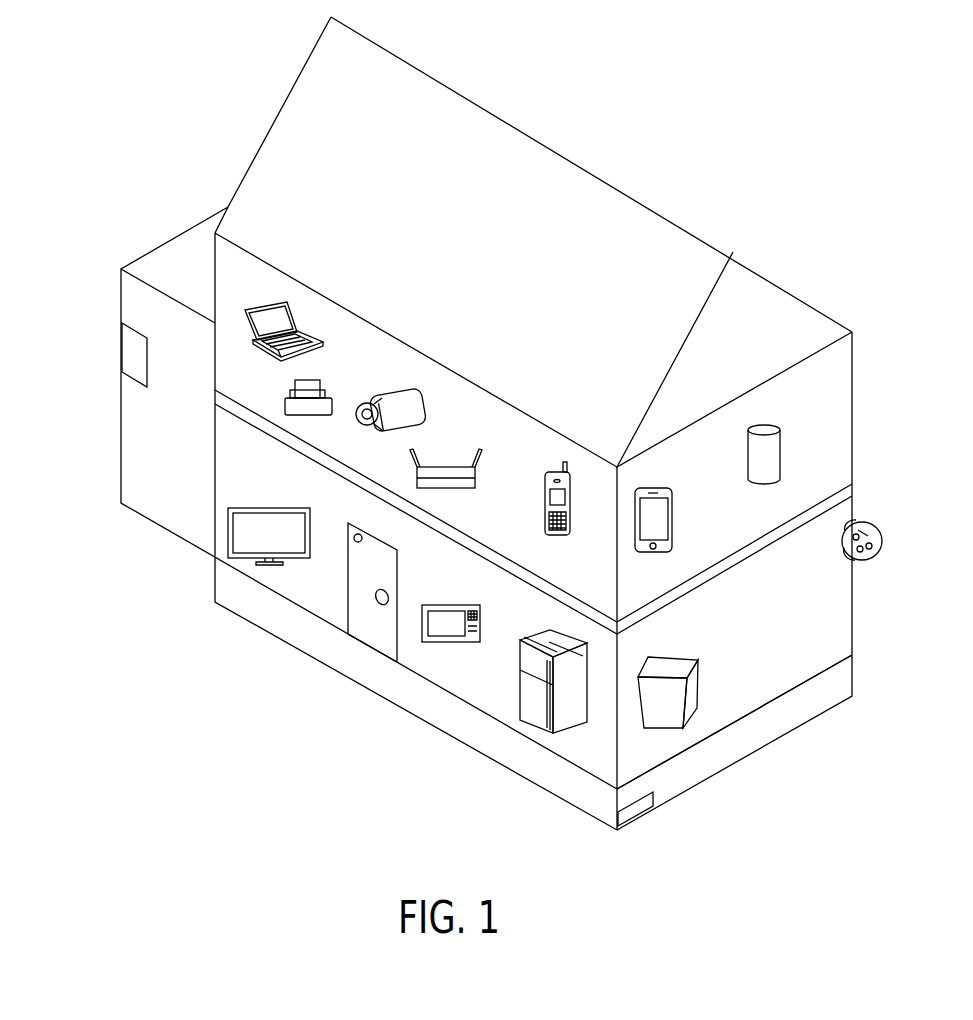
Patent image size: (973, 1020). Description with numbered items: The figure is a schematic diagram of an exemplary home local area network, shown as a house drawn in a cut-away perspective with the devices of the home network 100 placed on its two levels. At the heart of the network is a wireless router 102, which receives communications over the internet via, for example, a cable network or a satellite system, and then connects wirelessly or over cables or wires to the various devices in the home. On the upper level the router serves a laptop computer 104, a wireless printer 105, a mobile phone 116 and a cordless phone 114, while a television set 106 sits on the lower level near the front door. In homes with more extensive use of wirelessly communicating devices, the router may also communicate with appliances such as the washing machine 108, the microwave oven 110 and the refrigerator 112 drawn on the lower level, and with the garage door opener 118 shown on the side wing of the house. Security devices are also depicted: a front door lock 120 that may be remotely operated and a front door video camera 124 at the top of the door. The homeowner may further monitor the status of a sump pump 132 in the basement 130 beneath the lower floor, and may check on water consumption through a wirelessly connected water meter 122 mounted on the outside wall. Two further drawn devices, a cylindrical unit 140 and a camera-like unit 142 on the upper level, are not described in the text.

The home network 100 is at (835, 170).
The wireless router 102 is at (436, 465).
The laptop computer 104 is at (323, 347).
The wireless printer 105 is at (284, 404).
The television set 106 is at (250, 507).
The washing machine 108 is at (700, 680).
The microwave oven 110 is at (440, 604).
The refrigerator 112 is at (518, 690).
The cordless phone 114 is at (545, 506).
The mobile phone 116 is at (672, 516).
The garage door opener 118 is at (130, 356).
The front door lock 120 is at (384, 606).
The water meter 122 is at (882, 542).
The front door video camera 124 is at (347, 524).
The basement 130 is at (840, 680).
The sump pump 132 is at (633, 813).
The smart speaker 140 is at (781, 455).
The camera 142 is at (395, 391).